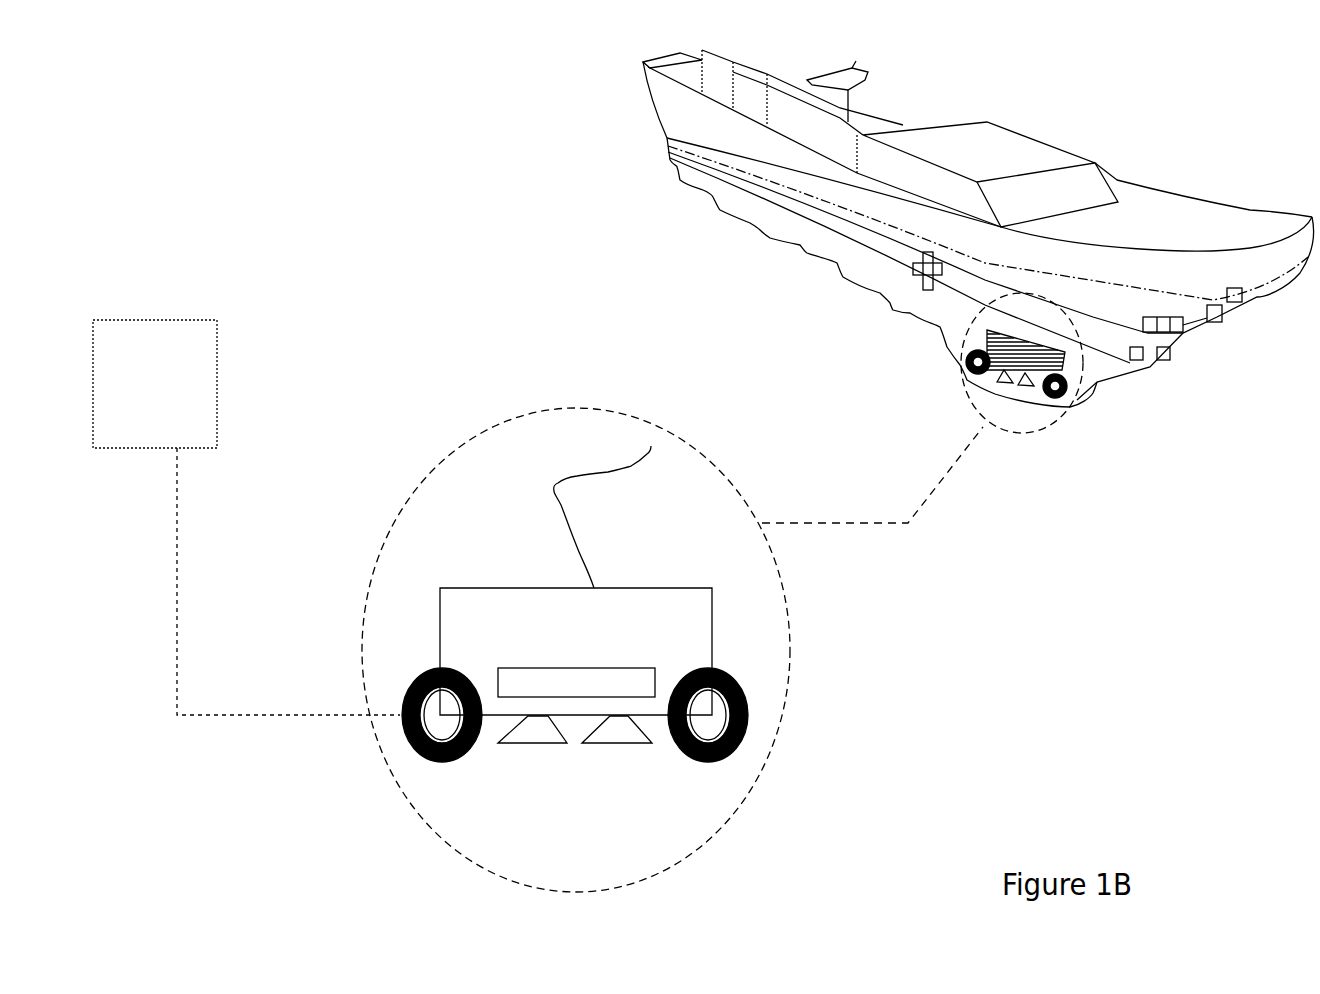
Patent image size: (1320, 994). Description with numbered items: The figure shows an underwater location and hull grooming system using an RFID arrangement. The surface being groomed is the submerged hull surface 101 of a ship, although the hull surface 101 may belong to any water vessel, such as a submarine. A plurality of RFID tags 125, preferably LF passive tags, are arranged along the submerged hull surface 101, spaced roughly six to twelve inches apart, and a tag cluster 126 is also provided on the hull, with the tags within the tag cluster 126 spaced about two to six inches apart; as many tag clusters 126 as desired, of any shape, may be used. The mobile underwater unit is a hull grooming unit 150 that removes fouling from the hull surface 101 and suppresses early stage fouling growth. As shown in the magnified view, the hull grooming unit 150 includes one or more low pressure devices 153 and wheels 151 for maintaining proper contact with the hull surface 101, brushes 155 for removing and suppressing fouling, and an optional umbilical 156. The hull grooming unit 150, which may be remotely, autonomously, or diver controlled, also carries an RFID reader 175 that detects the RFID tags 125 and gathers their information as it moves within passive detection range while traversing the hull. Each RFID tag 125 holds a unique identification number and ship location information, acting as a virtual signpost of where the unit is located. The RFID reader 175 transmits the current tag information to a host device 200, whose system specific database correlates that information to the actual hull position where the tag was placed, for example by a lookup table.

The hull surface 101 is at (948, 425).
The RFID tags 125 is at (1150, 330).
The tag cluster 126 is at (913, 270).
The hull grooming unit 150 is at (1025, 380).
The wheels 151 is at (420, 670).
The low pressure devices 153 is at (532, 723).
The brushes 155 is at (613, 719).
The umbilical 156 is at (585, 470).
The RFID reader 175 is at (545, 667).
The host device 200 is at (246, 517).